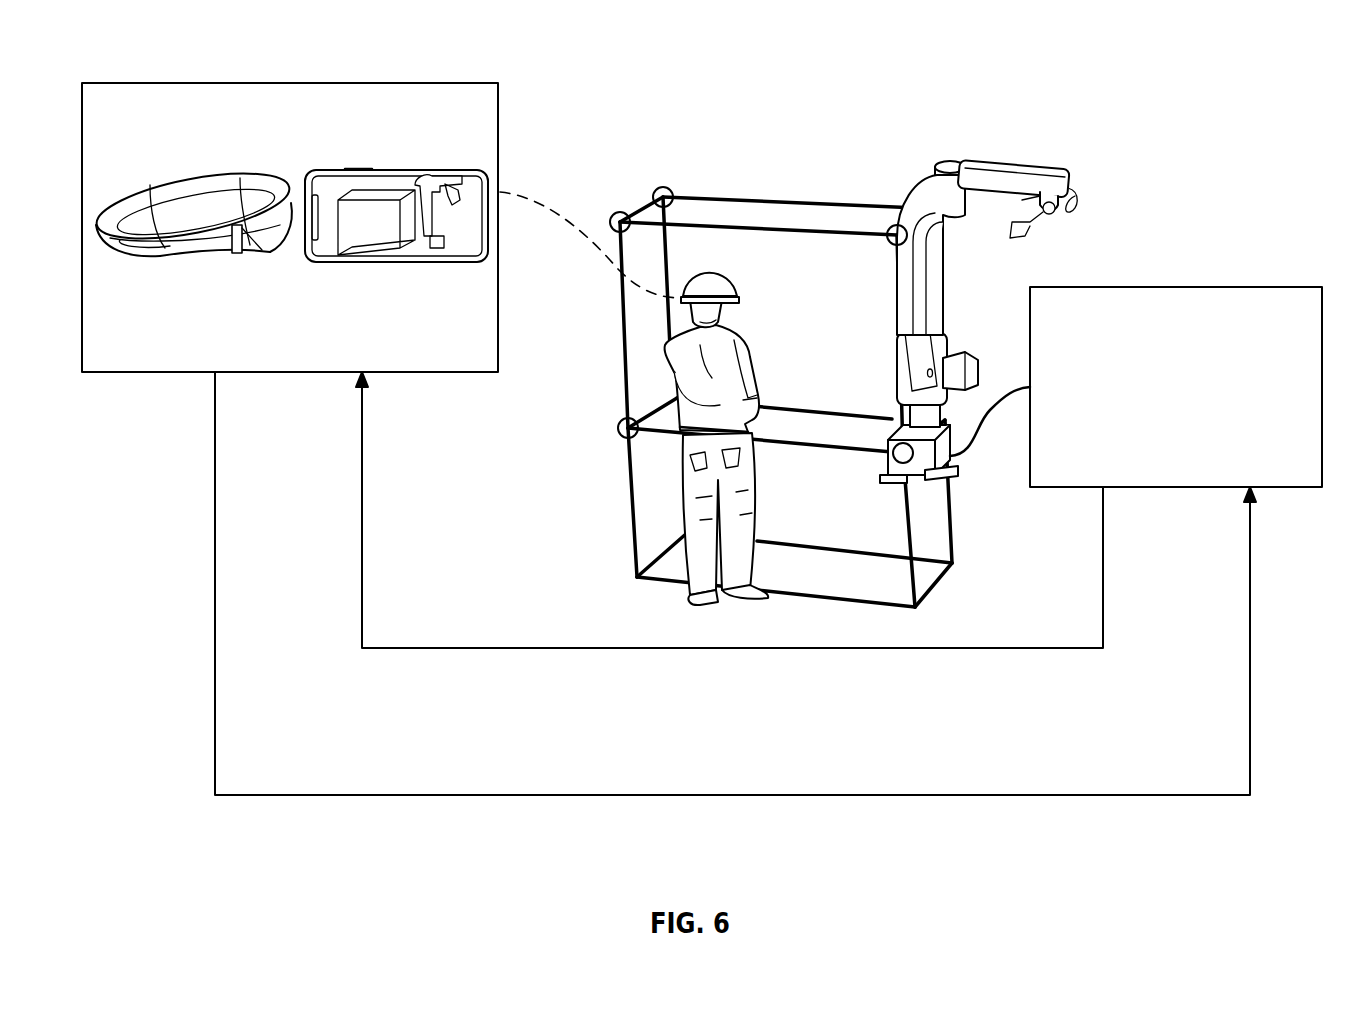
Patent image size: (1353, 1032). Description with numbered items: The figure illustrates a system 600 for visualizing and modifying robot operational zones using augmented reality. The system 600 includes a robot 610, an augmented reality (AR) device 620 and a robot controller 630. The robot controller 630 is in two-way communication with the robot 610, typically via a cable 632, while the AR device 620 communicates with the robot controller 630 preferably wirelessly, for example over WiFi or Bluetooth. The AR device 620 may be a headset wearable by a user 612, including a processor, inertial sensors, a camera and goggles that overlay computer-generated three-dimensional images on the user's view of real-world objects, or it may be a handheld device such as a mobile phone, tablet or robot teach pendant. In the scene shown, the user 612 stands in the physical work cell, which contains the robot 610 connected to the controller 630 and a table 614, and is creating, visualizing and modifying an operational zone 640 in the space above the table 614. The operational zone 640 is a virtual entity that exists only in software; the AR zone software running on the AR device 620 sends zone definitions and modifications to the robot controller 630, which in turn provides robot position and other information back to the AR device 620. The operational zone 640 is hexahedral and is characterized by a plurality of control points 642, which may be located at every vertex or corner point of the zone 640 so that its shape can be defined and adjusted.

The system 600 is at (1177, 54).
The robot 610 is at (953, 164).
The user 612 is at (685, 528).
The table 614 is at (955, 572).
The augmented reality (AR) device 620 is at (148, 83).
The robot controller 630 is at (1255, 287).
The cable 632 is at (982, 440).
The operational zone 640 is at (815, 210).
The control points 642 is at (661, 187).